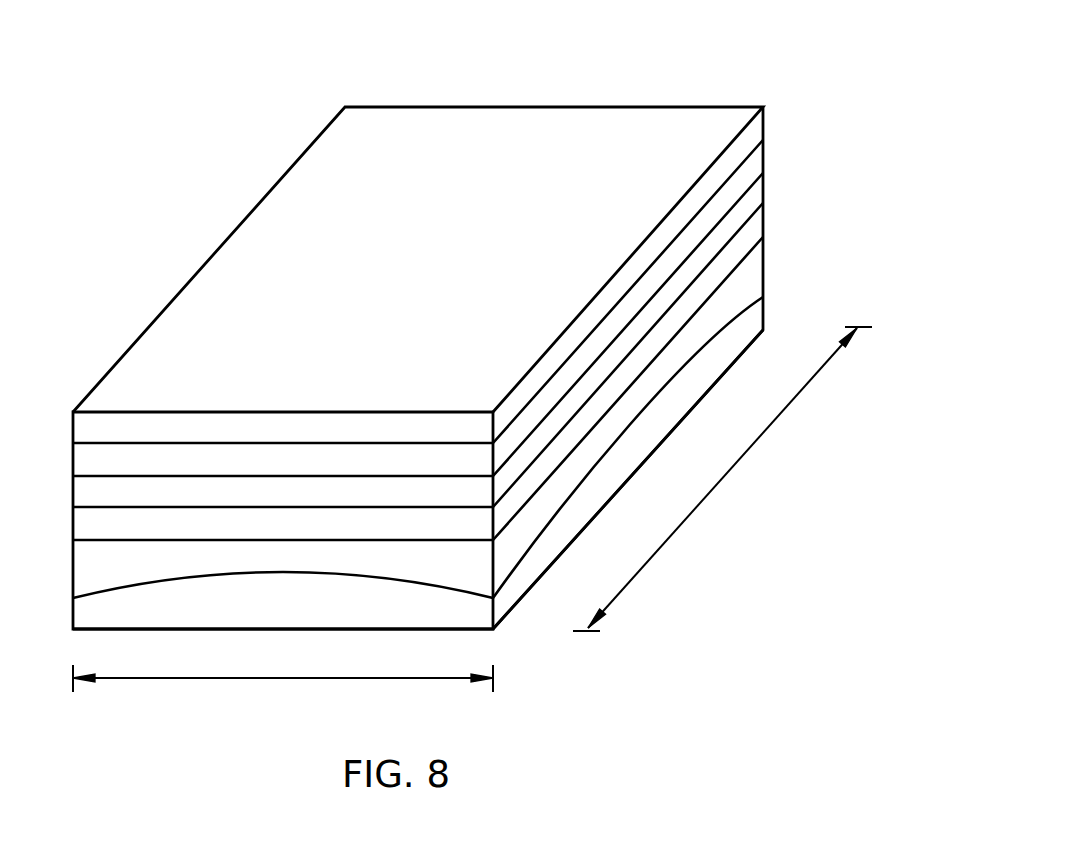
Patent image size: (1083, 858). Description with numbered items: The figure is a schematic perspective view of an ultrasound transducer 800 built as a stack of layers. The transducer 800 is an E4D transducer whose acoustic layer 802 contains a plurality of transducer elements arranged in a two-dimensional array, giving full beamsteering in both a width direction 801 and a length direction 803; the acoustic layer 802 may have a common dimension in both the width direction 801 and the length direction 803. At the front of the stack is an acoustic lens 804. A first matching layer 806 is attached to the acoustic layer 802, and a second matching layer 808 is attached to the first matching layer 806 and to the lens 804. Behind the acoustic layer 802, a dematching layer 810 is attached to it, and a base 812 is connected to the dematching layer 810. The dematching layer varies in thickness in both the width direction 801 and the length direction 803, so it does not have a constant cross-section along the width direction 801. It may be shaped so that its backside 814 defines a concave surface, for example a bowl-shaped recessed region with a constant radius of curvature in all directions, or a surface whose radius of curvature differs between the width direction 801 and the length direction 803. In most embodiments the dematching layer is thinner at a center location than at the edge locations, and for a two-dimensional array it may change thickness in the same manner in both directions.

The ultrasound transducer 800 is at (672, 80).
The acoustic lens 804 is at (753, 130).
The second matching layer 808 is at (755, 162).
The first matching layer 806 is at (753, 197).
The acoustic layer 802 is at (753, 233).
The dematching layer 810 is at (753, 282).
The base 812 is at (712, 372).
The backside 814 is at (197, 577).
The width direction 801 is at (283, 680).
The length direction 803 is at (730, 467).